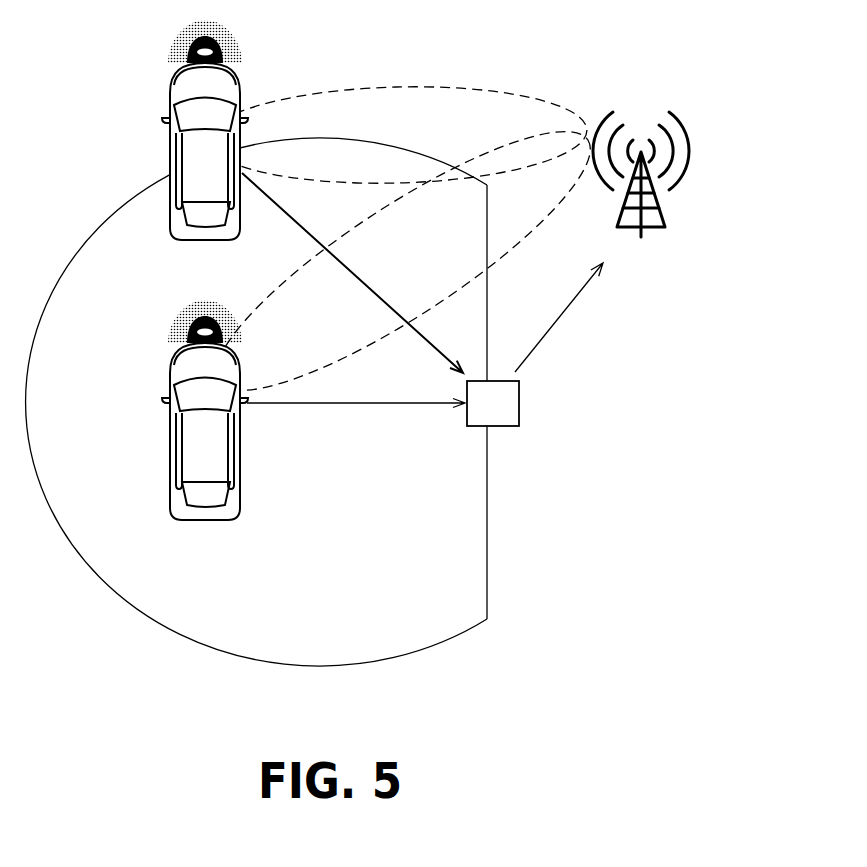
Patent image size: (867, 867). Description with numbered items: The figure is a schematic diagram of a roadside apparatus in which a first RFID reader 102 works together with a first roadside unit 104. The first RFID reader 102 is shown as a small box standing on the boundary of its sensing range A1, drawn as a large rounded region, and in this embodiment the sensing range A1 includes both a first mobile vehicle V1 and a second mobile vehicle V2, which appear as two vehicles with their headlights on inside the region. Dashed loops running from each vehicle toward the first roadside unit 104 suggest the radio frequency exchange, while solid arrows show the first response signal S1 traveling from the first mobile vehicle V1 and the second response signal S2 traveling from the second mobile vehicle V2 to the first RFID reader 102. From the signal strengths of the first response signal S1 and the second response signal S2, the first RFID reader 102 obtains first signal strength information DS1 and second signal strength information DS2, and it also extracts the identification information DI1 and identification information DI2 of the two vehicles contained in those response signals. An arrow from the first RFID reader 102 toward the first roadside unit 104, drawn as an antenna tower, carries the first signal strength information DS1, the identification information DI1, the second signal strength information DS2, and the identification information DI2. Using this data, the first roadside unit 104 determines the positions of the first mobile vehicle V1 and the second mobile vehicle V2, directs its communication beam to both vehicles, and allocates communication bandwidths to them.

The first radio frequency identification (RFID) reader 102 is at (507, 426).
The first roadside unit 104 is at (657, 233).
The first mobile vehicle V1 is at (205, 520).
The second mobile vehicle V2 is at (243, 80).
The first response signal S1 is at (356, 424).
The second response signal S2 is at (352, 273).
The sensing range A1 is at (450, 613).
The first signal strength information DS1 is at (583, 334).
The identification information DI1 is at (583, 334).
The second signal strength information DS2 is at (583, 334).
The identification information DI2 is at (583, 334).